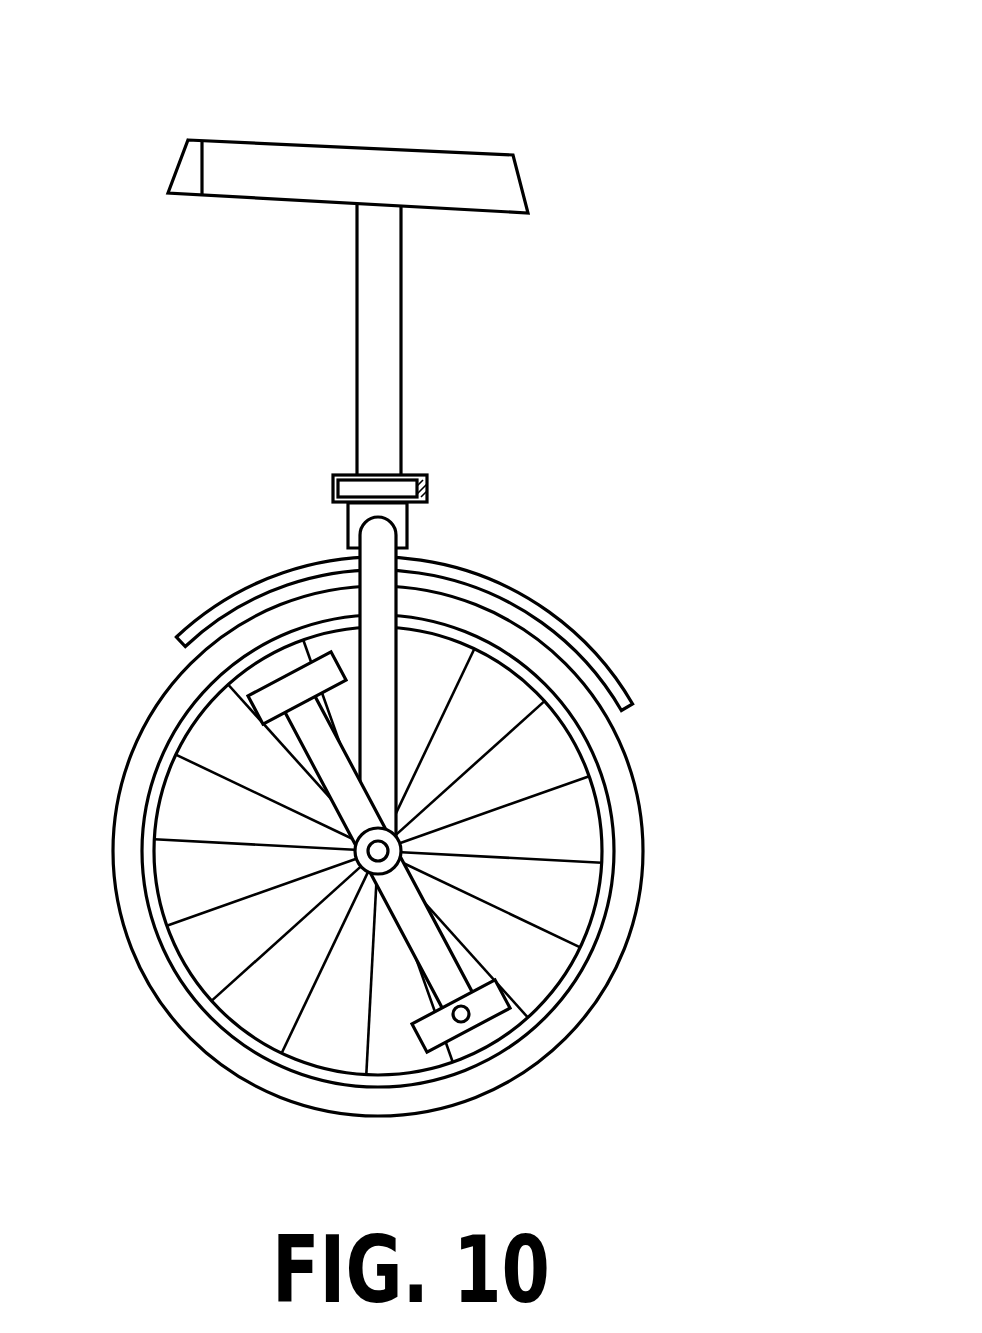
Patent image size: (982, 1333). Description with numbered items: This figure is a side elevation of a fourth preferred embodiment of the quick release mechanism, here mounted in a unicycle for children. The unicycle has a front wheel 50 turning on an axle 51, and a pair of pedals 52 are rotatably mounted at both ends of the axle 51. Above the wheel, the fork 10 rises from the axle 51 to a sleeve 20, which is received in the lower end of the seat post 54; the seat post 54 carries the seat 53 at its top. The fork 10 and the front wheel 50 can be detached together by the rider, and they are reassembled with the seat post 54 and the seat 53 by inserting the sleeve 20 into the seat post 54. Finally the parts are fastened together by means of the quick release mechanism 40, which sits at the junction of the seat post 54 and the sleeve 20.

The fork 10 is at (400, 560).
The sleeve 20 is at (333, 502).
The quick release mechanism 40 is at (417, 478).
The front wheel 50 is at (598, 682).
The axle 51 is at (402, 847).
The pedals 52 is at (273, 692).
The seat 53 is at (373, 163).
The seat post 54 is at (388, 340).